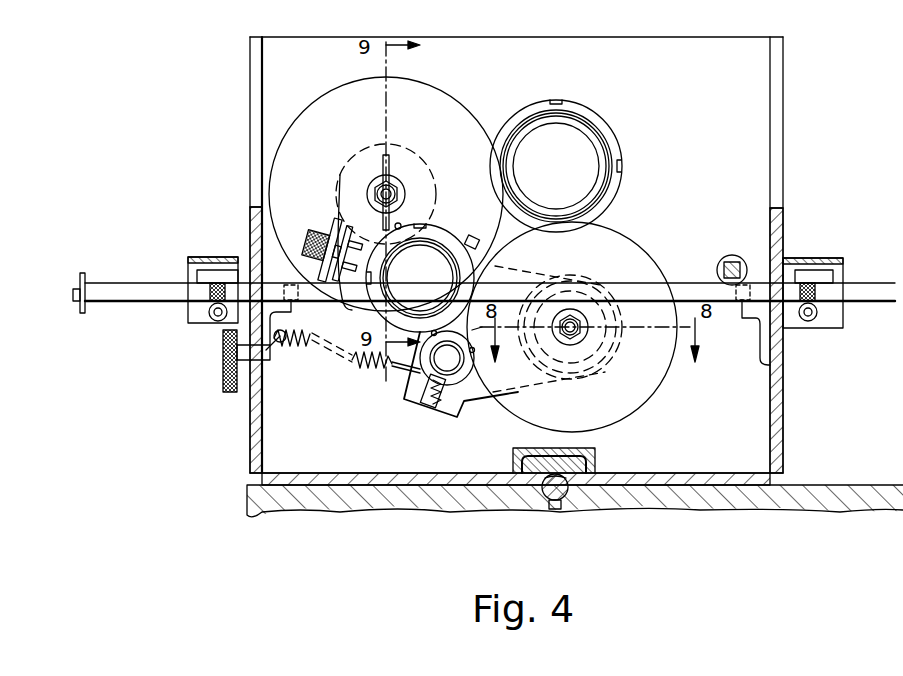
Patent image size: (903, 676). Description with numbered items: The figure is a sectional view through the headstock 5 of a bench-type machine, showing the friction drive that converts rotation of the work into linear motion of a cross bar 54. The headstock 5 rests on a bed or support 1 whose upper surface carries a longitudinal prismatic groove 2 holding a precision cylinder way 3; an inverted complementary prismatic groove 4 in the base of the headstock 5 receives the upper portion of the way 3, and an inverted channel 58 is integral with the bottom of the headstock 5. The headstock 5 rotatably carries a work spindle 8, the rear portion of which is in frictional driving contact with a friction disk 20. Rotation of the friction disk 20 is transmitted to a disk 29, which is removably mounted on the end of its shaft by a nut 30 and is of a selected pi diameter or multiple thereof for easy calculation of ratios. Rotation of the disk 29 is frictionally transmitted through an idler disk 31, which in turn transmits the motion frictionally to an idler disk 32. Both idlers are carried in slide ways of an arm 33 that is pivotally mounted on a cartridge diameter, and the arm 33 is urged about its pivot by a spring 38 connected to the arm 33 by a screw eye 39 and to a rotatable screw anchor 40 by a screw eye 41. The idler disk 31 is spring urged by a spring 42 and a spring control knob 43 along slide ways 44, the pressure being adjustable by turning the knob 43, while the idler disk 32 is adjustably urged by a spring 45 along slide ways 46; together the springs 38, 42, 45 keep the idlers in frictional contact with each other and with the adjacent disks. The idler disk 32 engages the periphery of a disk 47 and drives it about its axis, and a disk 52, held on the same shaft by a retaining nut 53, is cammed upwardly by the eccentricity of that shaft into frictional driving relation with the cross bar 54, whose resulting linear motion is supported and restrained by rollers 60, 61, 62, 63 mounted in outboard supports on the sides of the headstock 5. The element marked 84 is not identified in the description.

The bed or support 1 is at (247, 508).
The prismatic groove 2 is at (570, 496).
The precision cylinder way 3 is at (555, 509).
The inverted complementary prismatic groove 4 is at (568, 490).
The headstock 5 is at (250, 427).
The work spindle 8 is at (594, 126).
The friction disk 20 is at (440, 90).
The disk 29 is at (392, 165).
The nut 30 is at (400, 194).
The idler disk 31 is at (450, 232).
The idler disk 32 is at (408, 398).
The arm 33 is at (480, 395).
The spring 38 is at (368, 370).
The screw eye 39 is at (404, 372).
The rotatable screw anchor 40 is at (262, 375).
The screw eye 41 is at (282, 347).
The spring 42 is at (349, 251).
The spring control knob 43 is at (306, 250).
The slide ways 44 is at (352, 225).
The spring 45 is at (440, 404).
The slide ways 46 is at (426, 406).
The disk 47 is at (676, 360).
The disk 52 is at (586, 348).
The retaining nut 53 is at (582, 330).
The cross bar 54 is at (690, 283).
The inverted channel 58 is at (596, 455).
The roller 60 is at (210, 292).
The roller 61 is at (212, 318).
The roller 62 is at (822, 300).
The roller 63 is at (812, 322).
The bar 84 is at (732, 255).